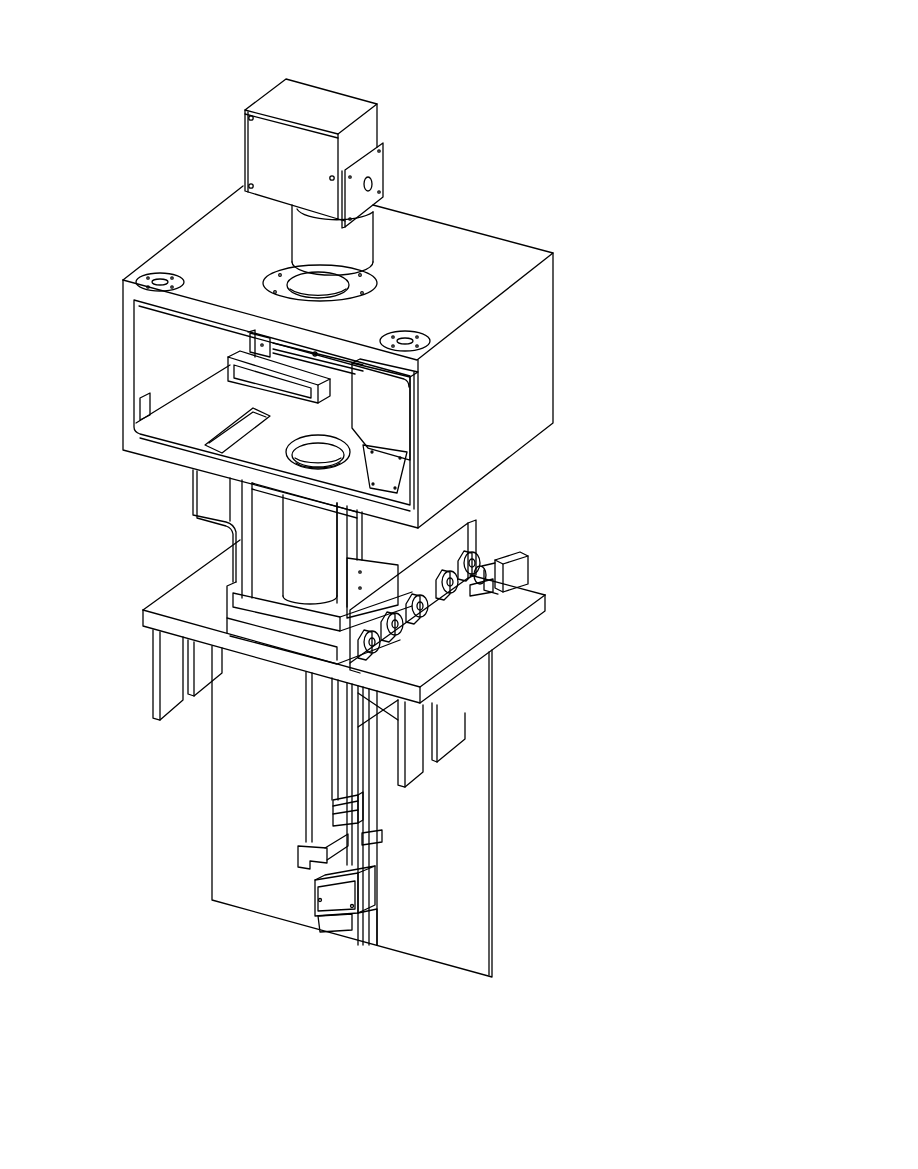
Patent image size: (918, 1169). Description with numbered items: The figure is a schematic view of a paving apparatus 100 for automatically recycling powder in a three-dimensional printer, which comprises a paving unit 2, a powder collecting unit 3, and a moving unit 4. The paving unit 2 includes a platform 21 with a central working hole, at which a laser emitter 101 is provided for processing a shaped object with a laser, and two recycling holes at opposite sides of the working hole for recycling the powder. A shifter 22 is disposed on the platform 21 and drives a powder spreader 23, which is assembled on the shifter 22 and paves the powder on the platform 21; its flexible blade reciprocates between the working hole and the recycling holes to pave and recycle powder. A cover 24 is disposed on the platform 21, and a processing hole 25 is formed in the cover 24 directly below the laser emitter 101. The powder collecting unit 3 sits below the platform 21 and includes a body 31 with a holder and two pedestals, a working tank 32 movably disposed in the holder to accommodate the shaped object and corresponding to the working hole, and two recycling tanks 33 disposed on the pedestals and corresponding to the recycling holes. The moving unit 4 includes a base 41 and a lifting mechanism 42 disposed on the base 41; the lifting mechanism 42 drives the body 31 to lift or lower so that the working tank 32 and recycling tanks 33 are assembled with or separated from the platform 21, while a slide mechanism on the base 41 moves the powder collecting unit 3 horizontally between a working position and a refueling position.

The paving apparatus 100 is at (88, 41).
The laser emitter 101 is at (323, 88).
The paving unit 2 is at (535, 252).
The platform 21 is at (177, 417).
The shifter 22 is at (255, 345).
The powder spreader 23 is at (388, 405).
The cover 24 is at (215, 232).
The processing hole 25 is at (323, 289).
The powder collecting unit 3 is at (80, 485).
The body 31 is at (237, 538).
The working tank 32 is at (235, 565).
The recycling tanks 33 is at (210, 490).
The moving unit 4 is at (533, 619).
The base 41 is at (143, 618).
The lifting mechanism 42 is at (380, 842).